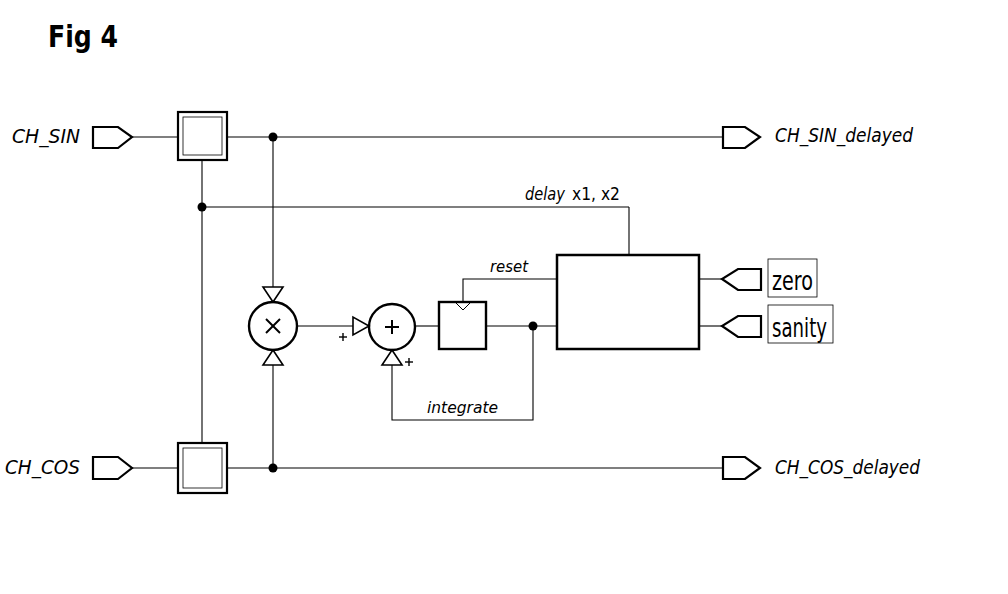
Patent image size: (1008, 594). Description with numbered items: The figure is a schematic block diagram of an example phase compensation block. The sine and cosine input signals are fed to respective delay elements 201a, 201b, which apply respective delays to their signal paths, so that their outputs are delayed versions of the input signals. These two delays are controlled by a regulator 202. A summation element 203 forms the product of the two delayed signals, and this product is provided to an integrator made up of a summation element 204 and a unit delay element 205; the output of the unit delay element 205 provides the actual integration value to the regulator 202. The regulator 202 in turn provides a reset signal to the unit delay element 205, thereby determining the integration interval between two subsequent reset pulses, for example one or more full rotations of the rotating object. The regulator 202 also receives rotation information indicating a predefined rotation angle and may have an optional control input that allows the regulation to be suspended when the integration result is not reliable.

The delay element 201a is at (183, 117).
The delay element 201b is at (183, 447).
The regulator 202 is at (647, 313).
The summation element 203 is at (285, 329).
The summation element 204 is at (389, 322).
The unit delay element 205 is at (462, 345).